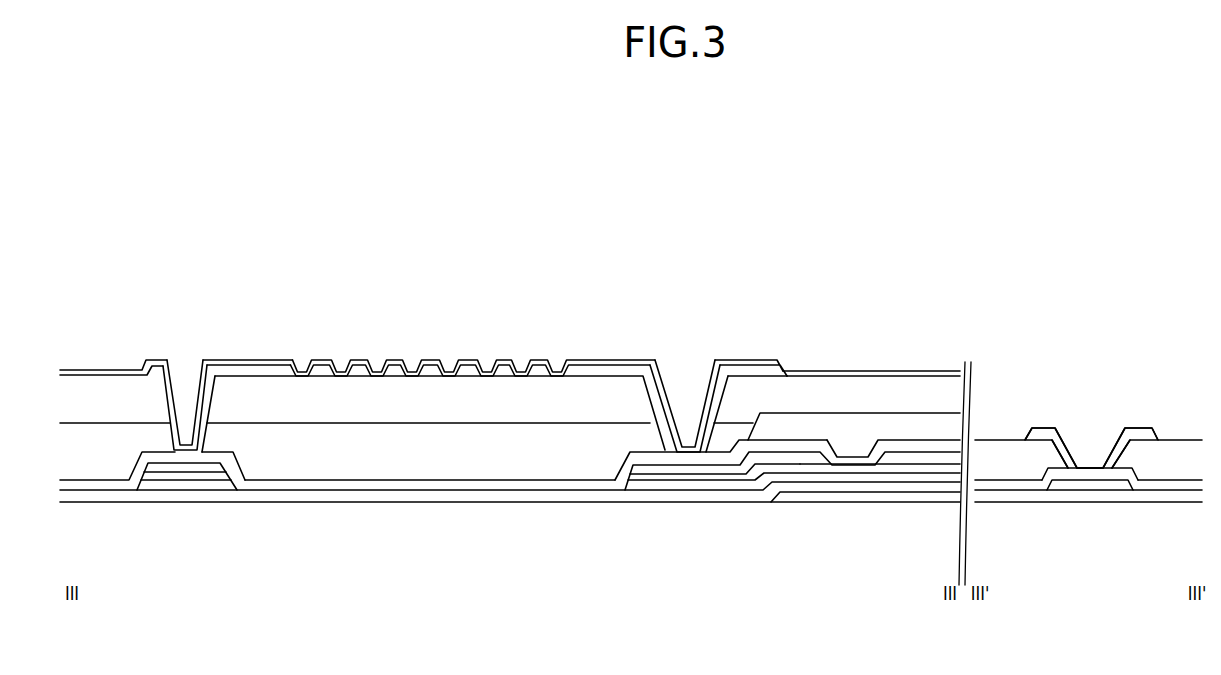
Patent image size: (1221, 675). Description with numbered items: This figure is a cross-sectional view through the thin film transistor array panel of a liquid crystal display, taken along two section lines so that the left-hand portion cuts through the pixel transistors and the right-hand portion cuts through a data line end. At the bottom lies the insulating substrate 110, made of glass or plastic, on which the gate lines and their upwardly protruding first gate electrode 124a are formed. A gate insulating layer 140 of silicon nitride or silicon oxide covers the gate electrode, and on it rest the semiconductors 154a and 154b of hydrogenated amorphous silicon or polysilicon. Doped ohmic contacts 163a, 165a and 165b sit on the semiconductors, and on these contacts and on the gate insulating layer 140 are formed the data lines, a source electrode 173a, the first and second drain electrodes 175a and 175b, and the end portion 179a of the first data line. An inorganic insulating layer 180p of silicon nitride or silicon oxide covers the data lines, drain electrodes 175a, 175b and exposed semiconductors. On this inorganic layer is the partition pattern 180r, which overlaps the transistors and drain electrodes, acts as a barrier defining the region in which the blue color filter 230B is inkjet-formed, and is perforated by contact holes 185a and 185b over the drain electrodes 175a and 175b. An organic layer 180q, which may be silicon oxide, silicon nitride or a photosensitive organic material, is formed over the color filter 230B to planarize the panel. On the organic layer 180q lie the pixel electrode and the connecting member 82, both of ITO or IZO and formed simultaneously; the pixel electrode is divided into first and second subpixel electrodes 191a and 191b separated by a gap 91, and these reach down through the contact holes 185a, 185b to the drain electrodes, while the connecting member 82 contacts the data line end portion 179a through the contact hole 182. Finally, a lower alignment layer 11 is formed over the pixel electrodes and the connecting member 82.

The insulating substrate 110 is at (413, 548).
The first gate electrode 124a is at (872, 494).
The gate insulating layer 140 is at (467, 497).
The semiconductor 154a is at (826, 476).
The semiconductor 154b is at (157, 483).
The ohmic contact 163a is at (920, 465).
The ohmic contact 165a is at (792, 466).
The ohmic contact 165b is at (187, 477).
The source electrode 173a is at (933, 456).
The first drain electrode 175a is at (650, 466).
The second drain electrode 175b is at (212, 468).
The end portion of the data line 179a is at (1090, 487).
The inorganic insulating layer 180p is at (550, 485).
The organic layer 180q is at (87, 392).
The partition pattern 180r is at (808, 427).
The contact hole 182 is at (1122, 453).
The connecting member 82 is at (1047, 436).
The contact hole 185a is at (704, 400).
The contact hole 185b is at (162, 402).
The first subpixel electrode 191a is at (583, 370).
The second subpixel electrode 191b is at (247, 372).
The blue color filter 230B is at (350, 460).
The gap 91 is at (301, 370).
The lower alignment layer 11 is at (857, 398).